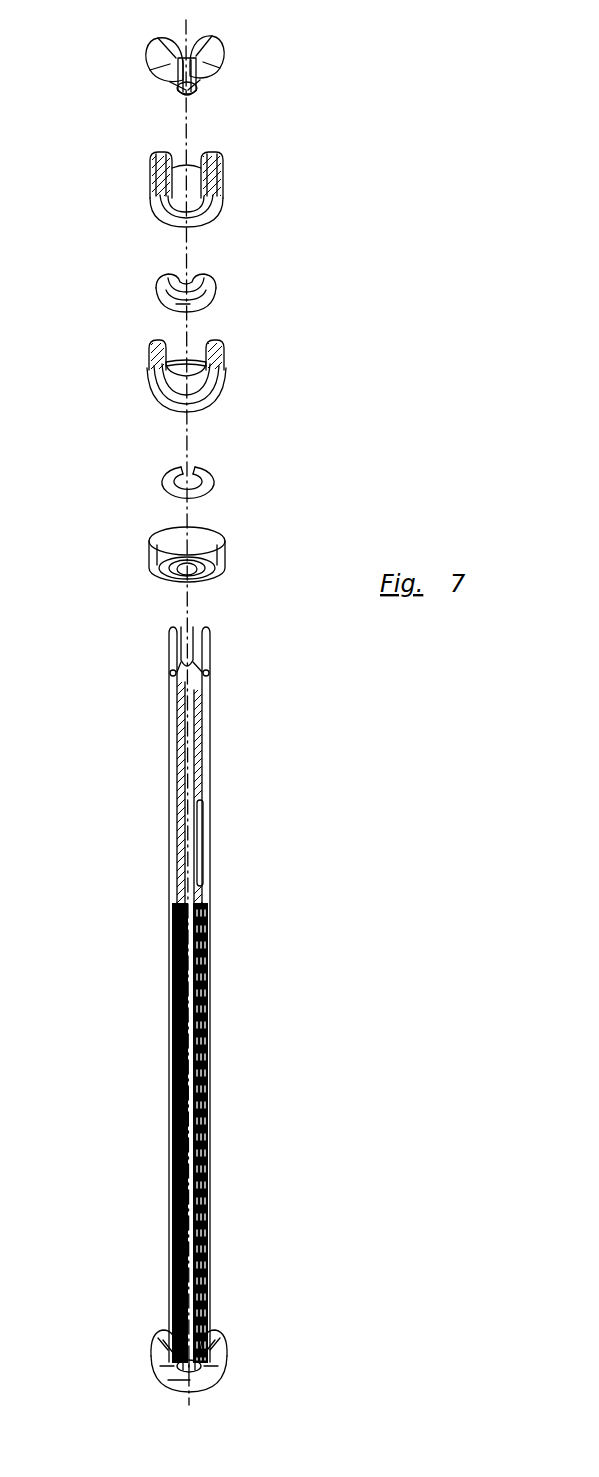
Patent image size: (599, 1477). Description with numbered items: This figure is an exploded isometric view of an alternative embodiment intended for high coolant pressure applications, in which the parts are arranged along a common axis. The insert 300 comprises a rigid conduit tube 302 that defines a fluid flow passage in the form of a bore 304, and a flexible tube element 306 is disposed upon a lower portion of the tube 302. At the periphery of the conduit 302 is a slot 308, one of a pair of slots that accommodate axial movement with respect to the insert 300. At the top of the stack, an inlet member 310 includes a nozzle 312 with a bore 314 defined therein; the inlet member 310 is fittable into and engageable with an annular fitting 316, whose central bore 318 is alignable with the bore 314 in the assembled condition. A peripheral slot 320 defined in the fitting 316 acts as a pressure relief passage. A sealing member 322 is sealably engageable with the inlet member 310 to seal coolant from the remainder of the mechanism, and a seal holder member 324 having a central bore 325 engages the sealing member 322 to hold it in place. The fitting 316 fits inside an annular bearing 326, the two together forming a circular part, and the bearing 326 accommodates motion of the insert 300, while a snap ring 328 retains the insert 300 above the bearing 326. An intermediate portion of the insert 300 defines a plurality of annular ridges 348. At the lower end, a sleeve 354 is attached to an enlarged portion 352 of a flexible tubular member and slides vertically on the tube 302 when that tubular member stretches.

The insert 300 is at (222, 692).
The rigid conduit tube 302 is at (168, 728).
The bore 304 is at (186, 630).
The flexible tube element 306 is at (205, 988).
The slot 308 is at (200, 820).
The inlet member 310 is at (216, 52).
The nozzle 312 is at (199, 86).
The bore 314 is at (206, 66).
The annular fitting 316 is at (222, 178).
The central bore 318 is at (208, 218).
The peripheral slot 320 is at (150, 178).
The sealing member 322 is at (218, 300).
The seal holder member 324 is at (224, 382).
The central bore 325 is at (181, 366).
The annular bearing 326 is at (148, 560).
The snap ring 328 is at (164, 478).
The annular ridges 348 is at (205, 916).
The enlarged portion 352 is at (224, 1346).
The sleeve 354 is at (222, 1388).